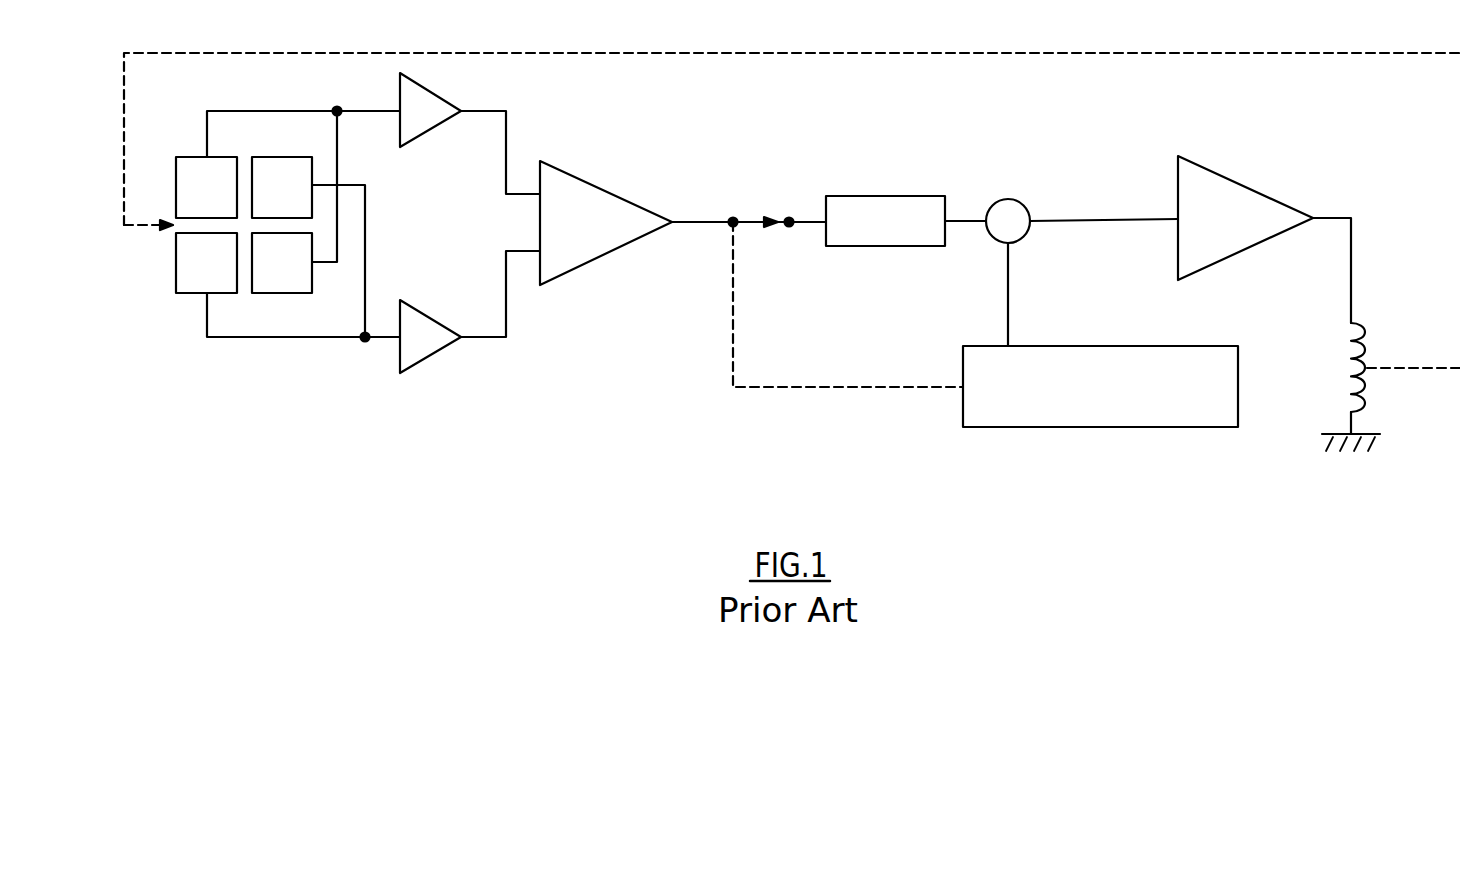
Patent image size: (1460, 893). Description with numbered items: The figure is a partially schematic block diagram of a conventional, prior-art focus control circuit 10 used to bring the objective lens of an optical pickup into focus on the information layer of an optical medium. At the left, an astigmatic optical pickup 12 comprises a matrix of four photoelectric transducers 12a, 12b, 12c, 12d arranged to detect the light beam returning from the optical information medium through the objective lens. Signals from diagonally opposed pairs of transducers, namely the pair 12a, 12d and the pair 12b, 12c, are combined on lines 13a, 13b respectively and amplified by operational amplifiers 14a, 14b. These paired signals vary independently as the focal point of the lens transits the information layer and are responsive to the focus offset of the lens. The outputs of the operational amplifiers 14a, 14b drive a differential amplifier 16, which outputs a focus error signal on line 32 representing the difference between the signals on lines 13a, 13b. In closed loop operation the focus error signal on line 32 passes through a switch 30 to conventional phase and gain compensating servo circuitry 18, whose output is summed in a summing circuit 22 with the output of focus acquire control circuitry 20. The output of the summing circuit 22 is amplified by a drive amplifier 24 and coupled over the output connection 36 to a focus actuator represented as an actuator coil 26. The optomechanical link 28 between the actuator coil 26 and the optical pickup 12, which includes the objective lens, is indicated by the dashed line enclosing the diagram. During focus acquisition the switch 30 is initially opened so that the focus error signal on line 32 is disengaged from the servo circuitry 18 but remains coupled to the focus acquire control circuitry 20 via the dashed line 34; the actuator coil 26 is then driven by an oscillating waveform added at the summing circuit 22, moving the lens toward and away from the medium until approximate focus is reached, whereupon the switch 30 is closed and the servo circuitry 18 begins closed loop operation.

The focus control circuit 10 is at (808, 436).
The astigmatic optical pickup 12 is at (236, 249).
The photoelectric transducer 12a is at (196, 164).
The photoelectric transducer 12b is at (297, 163).
The photoelectric transducer 12c is at (200, 286).
The photoelectric transducer 12d is at (268, 286).
The line 13a is at (371, 110).
The line 13b is at (386, 340).
The operational amplifier 14a is at (422, 105).
The operational amplifier 14b is at (415, 325).
The differential amplifier 16 is at (570, 250).
The servo circuitry 18 is at (862, 247).
The focus acquire control circuitry 20 is at (997, 428).
The summing circuit 22 is at (1013, 199).
The drive amplifier 24 is at (1225, 192).
The actuator coil 26 is at (1363, 386).
The optomechanical link 28 is at (1110, 54).
The switch 30 is at (758, 218).
The line 32 is at (707, 226).
The line 34 is at (763, 389).
The drive signal line 36 is at (1352, 260).